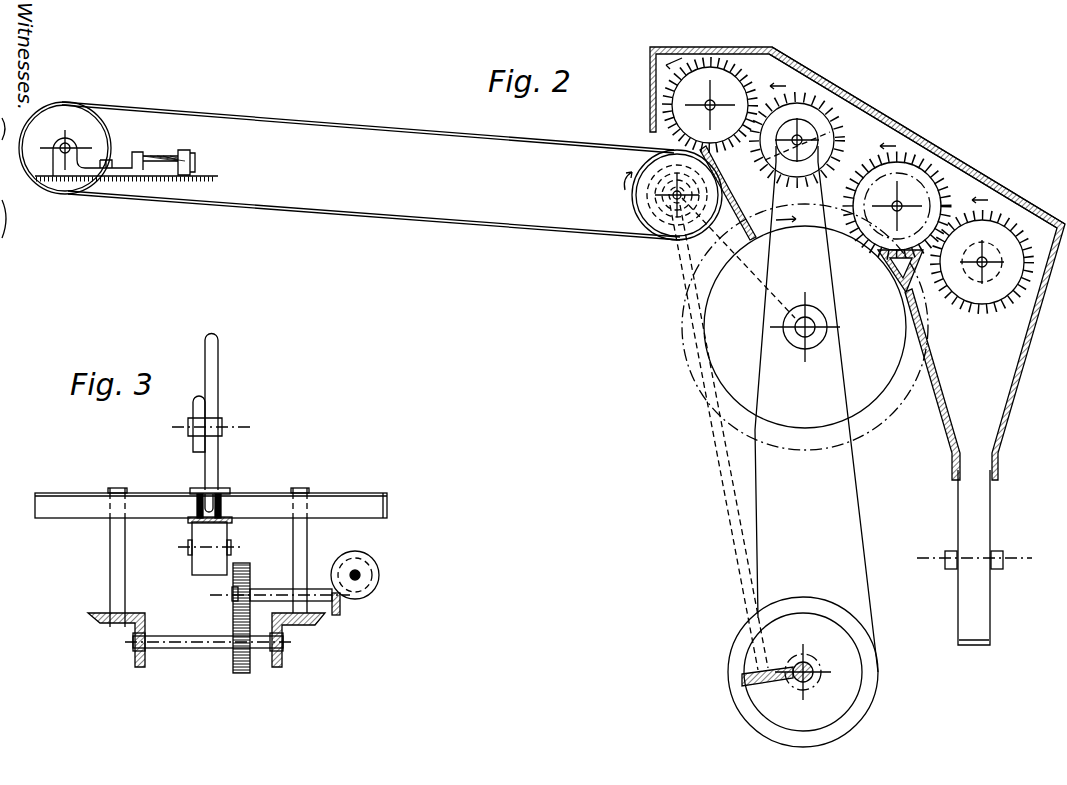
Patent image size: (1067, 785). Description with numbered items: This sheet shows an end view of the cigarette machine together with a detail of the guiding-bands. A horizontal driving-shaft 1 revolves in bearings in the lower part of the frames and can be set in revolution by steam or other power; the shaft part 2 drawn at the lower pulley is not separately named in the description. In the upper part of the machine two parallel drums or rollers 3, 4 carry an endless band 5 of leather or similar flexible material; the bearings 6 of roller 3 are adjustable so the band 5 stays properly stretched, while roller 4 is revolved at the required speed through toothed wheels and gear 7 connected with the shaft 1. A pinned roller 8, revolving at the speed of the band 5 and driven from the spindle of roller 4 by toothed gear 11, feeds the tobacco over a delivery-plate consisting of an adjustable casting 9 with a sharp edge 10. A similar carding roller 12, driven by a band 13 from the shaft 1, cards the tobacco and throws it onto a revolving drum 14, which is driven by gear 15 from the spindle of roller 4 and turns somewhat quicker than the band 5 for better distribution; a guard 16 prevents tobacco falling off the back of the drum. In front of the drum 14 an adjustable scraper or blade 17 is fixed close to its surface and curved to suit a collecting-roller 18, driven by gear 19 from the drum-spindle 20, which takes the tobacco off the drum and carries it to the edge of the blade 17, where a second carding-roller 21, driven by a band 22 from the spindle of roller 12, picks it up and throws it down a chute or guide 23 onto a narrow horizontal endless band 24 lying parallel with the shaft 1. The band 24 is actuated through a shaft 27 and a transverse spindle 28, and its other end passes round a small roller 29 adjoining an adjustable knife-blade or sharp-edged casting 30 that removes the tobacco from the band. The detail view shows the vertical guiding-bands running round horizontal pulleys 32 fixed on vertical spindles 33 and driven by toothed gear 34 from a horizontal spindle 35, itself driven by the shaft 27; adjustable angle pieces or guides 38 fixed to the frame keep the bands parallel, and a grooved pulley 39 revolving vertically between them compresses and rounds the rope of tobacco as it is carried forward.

In FIG. 2, the driving-shaft 1 is at (820, 677).
In FIG. 2, the shaft 2 is at (795, 662).
In FIG. 2, the drum or roller 3 is at (105, 128).
In FIG. 2, the drum or roller 4 is at (640, 200).
In FIG. 2, the endless band 5 is at (410, 222).
In FIG. 2, the bearings 6 is at (58, 144).
In FIG. 2, the toothed wheels and gear 7 is at (656, 180).
In FIG. 2, the roller 8 is at (748, 84).
In FIG. 2, the adjustable casting 9 is at (764, 160).
In FIG. 2, the sharp edge 10 is at (710, 105).
In FIG. 2, the toothed gear 11 is at (841, 263).
In FIG. 2, the carding roller 12 is at (838, 92).
In FIG. 2, the band 13 is at (757, 374).
In FIG. 2, the revolving drum 14 is at (807, 228).
In FIG. 2, the gear 15 is at (777, 262).
In FIG. 2, the guard 16 is at (736, 193).
In FIG. 2, the adjustable scraper or blade 17 is at (896, 270).
In FIG. 2, the collecting-roller 18 is at (948, 153).
In FIG. 2, the gear 19 is at (940, 334).
In FIG. 2, the drum-spindle 20 is at (815, 343).
In FIG. 2, the second carding-roller 21 is at (982, 280).
In FIG. 2, the band 22 is at (830, 146).
In FIG. 2, the chute or guide 23 is at (992, 448).
In FIG. 2, the narrow horizontal endless band 24 is at (975, 510).
In FIG. 3, the shaft 27 is at (361, 582).
In FIG. 2, the transverse spindle 28 is at (947, 567).
In FIG. 3, the small roller 29 is at (200, 576).
In FIG. 3, the adjustable knife-blade or sharp-edged casting 30 is at (190, 524).
In FIG. 3, the horizontal pulleys 32 is at (54, 496).
In FIG. 3, the vertical spindles 33 is at (110, 568).
In FIG. 3, the toothed gear 34 is at (133, 624).
In FIG. 3, the horizontal spindle 35 is at (322, 592).
In FIG. 3, the adjustable angle pieces or guides 38 is at (197, 506).
In FIG. 3, the grooved pulley 39 is at (219, 386).